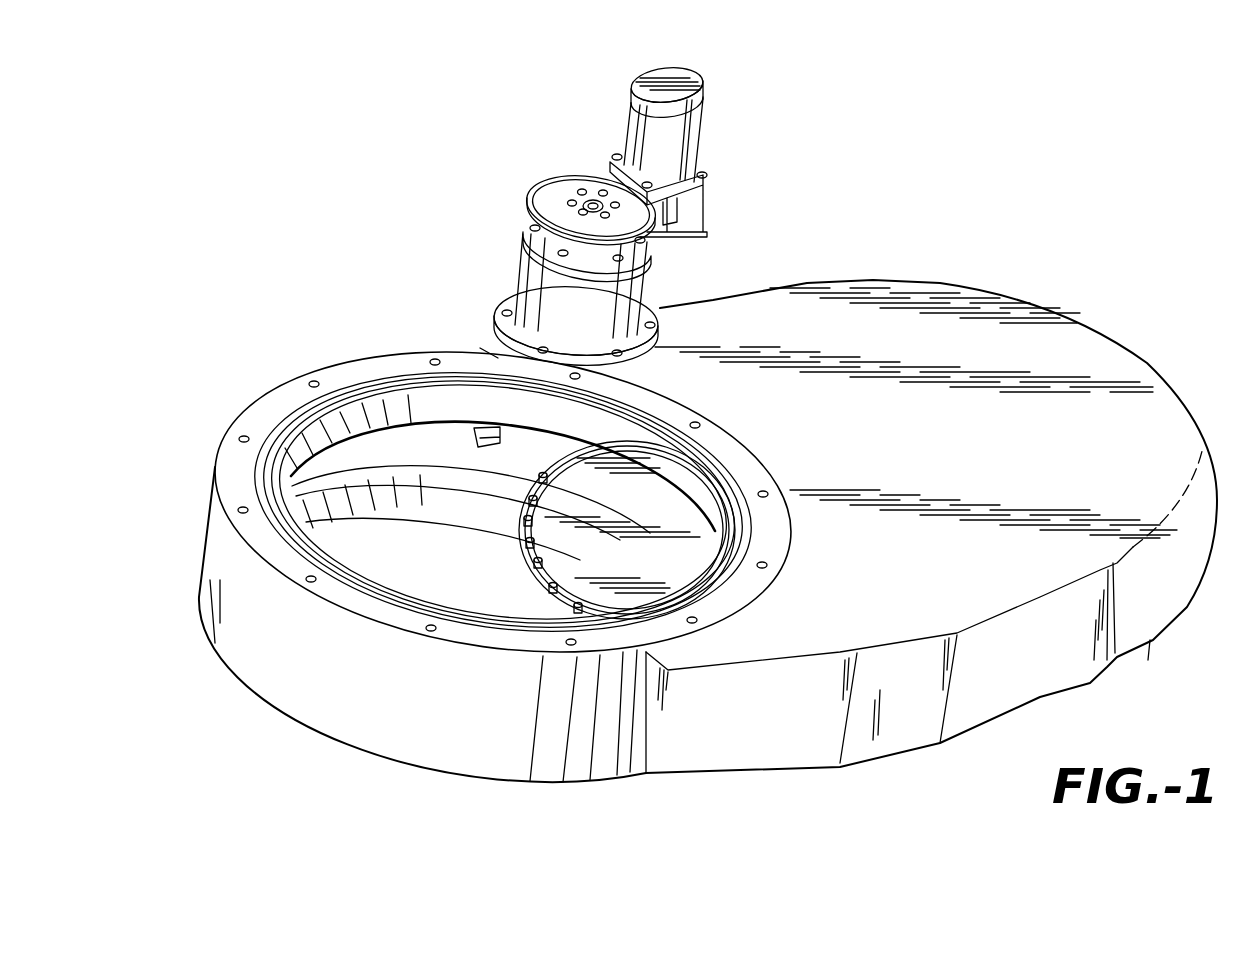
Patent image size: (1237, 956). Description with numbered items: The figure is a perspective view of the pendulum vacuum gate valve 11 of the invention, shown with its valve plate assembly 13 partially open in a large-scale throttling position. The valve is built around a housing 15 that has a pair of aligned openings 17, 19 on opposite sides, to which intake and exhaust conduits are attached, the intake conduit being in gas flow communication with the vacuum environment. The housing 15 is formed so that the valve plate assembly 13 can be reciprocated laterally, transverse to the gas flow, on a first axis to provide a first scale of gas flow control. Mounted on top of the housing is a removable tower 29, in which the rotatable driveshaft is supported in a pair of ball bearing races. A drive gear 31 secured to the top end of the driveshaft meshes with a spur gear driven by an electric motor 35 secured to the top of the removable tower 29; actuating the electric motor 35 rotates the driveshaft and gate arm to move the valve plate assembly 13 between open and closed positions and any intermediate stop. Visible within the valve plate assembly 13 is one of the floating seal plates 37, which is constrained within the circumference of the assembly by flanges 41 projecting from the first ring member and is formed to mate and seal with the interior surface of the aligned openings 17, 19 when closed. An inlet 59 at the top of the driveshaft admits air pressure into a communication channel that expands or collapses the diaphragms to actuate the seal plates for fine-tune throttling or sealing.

The pendulum vacuum gate valve 11 is at (991, 261).
The valve plate assembly 13 is at (520, 540).
The housing 15 is at (1110, 340).
The aligned opening 17 is at (377, 437).
The aligned opening 19 is at (380, 468).
The removable tower 29 is at (518, 268).
The drive gear 31 is at (543, 180).
The electric motor 35 is at (700, 148).
The floating seal plate 37 is at (620, 500).
The flanges 41 is at (563, 570).
The inlet 59 is at (593, 200).